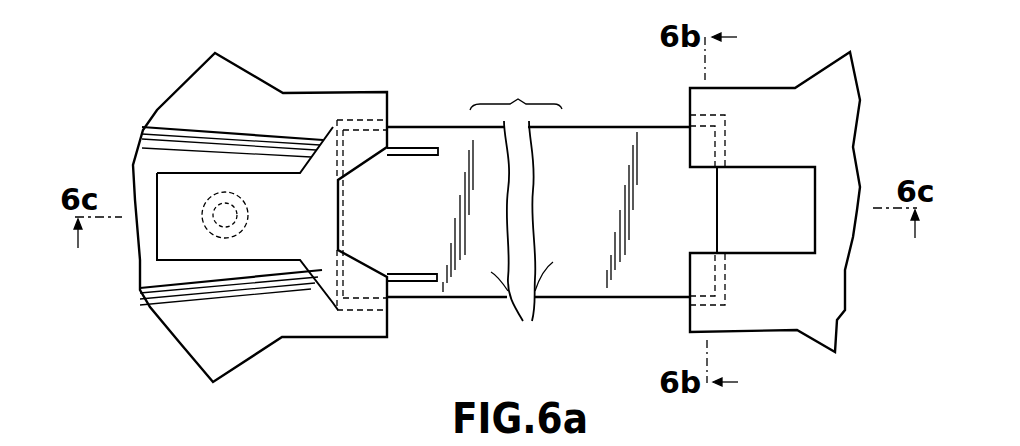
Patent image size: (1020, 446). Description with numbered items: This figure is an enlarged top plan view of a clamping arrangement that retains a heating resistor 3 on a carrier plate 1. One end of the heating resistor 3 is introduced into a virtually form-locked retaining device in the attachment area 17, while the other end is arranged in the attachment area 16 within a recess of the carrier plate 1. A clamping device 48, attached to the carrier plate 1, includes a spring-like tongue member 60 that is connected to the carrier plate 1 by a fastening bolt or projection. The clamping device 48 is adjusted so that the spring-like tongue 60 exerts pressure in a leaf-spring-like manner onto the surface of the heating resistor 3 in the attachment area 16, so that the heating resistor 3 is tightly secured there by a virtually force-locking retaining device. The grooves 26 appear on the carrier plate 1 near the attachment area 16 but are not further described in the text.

The carrier plate 1 is at (200, 358).
The grooves 26 is at (248, 290).
The clamping device 48 is at (167, 183).
The spring-like tongue member 60 is at (370, 142).
The attachment area 16 is at (389, 323).
The heating resistor 3 is at (538, 229).
The attachment area 17 is at (690, 317).